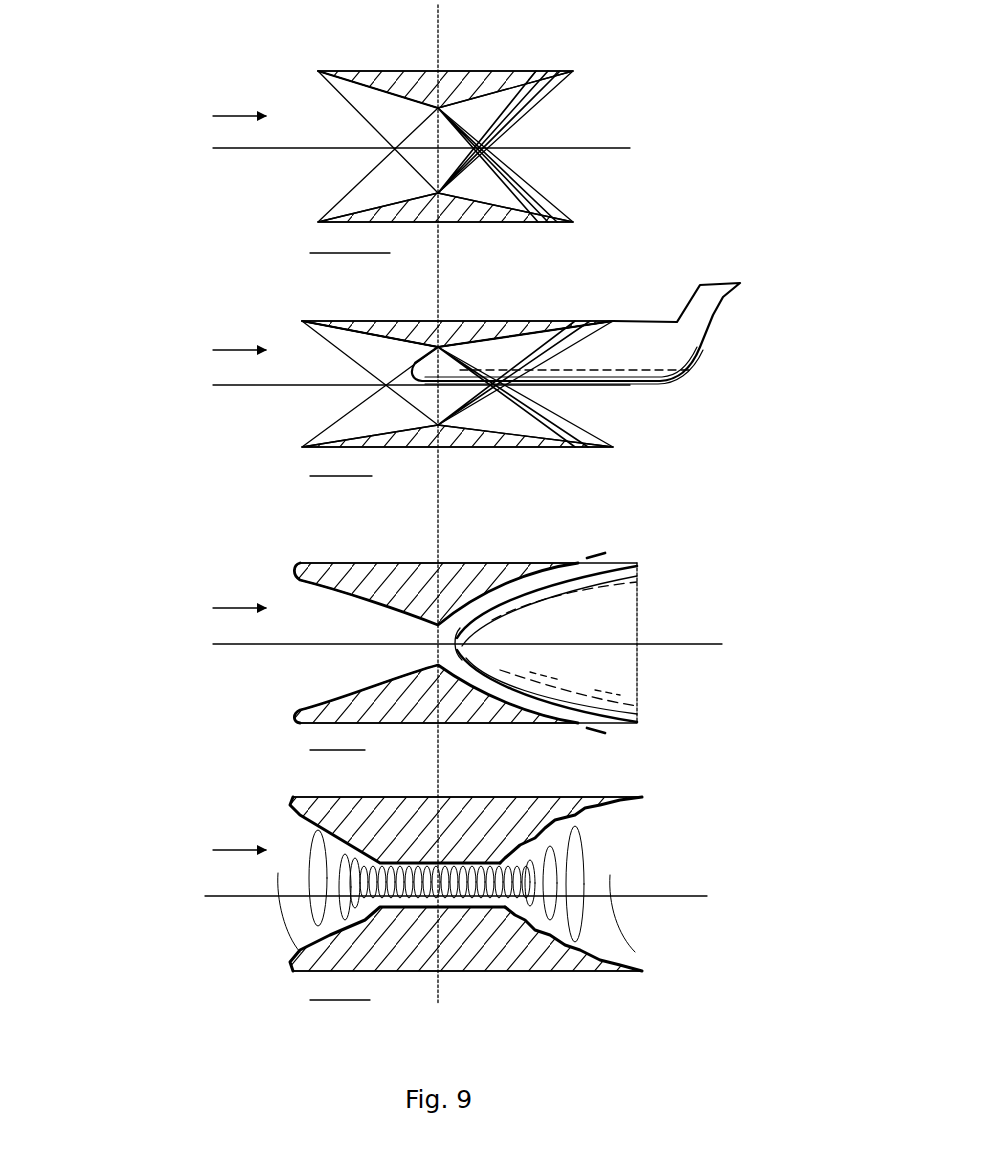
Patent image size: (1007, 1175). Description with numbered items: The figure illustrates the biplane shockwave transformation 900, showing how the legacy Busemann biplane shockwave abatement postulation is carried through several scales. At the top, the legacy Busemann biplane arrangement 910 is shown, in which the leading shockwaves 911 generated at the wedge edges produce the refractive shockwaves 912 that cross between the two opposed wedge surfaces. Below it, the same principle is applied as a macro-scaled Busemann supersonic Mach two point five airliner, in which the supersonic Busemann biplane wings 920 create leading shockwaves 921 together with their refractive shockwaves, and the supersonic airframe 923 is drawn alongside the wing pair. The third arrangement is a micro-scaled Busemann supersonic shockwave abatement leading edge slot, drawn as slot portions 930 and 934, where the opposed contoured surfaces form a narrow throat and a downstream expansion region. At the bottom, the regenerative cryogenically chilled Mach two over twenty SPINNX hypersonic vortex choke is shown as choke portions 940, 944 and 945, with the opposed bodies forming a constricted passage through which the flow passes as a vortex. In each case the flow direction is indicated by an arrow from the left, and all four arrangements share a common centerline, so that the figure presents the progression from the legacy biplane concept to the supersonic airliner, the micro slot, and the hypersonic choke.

The biplane shockwave transformation 900 is at (216, 514).
The Busemann biplane configuration 910 is at (530, 70).
The leading shockwaves 911 is at (348, 103).
The refractive shockwaves 912 is at (517, 121).
The supersonic Busemann biplane wings 920 is at (547, 320).
The leading shockwaves 921 is at (328, 340).
The supersonic airframe 923 is at (640, 322).
The leading edge slot 930 is at (530, 563).
The leading edge slot 934 is at (637, 565).
The SPINNX hypersonic vortex choke 940 is at (577, 800).
The SPINNX hypersonic vortex choke 944 is at (603, 805).
The SPINNX hypersonic vortex choke 945 is at (590, 945).